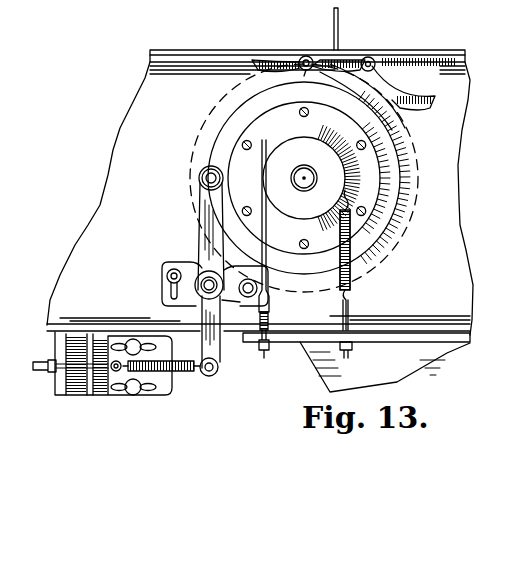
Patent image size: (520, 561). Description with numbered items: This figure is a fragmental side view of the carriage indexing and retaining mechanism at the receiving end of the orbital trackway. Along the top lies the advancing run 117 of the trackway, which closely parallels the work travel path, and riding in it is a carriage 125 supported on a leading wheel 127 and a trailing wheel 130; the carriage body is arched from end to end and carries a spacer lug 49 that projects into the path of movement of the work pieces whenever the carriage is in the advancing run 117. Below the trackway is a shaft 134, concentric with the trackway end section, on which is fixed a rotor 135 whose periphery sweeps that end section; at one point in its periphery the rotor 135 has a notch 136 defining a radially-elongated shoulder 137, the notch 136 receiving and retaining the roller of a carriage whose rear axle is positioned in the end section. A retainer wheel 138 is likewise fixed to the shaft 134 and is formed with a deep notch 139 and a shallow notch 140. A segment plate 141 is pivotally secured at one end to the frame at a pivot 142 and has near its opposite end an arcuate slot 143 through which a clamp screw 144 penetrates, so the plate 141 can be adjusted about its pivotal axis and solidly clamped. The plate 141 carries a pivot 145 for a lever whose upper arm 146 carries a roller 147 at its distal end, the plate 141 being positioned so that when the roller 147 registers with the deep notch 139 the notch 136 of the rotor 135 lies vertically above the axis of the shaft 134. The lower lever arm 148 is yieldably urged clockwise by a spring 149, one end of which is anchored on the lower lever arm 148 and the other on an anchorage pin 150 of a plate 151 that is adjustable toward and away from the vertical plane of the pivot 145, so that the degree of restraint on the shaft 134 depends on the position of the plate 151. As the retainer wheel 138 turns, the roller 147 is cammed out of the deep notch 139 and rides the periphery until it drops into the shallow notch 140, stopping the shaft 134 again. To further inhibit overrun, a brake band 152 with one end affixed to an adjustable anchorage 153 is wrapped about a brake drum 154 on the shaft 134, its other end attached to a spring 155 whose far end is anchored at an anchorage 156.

The spacer lug 49 is at (338, 18).
The advancing run 117 is at (420, 58).
The carriage 125 is at (345, 62).
The leading wheel 127 is at (372, 58).
The trailing wheel 130 is at (310, 57).
The shaft 134 is at (310, 178).
The rotor 135 is at (420, 168).
The notch 136 is at (312, 68).
The shoulder 137 is at (300, 58).
The retainer wheel 138 is at (398, 126).
The deep notch 139 is at (206, 170).
The shallow notch 140 is at (247, 278).
The segment plate 141 is at (170, 262).
The pivot 142 is at (250, 294).
The arcuate slot 143 is at (170, 297).
The clamp screw 144 is at (167, 276).
The pivot 145 is at (206, 272).
The upper arm 146 is at (201, 208).
The roller 147 is at (199, 176).
The lower lever arm 148 is at (215, 360).
The spring 149 is at (185, 372).
The anchorage pin 150 is at (114, 372).
The plate 151 is at (165, 390).
The brake band 152 is at (266, 230).
The adjustable anchorage 153 is at (270, 314).
The brake drum 154 is at (328, 143).
The spring 155 is at (350, 288).
The anchorage 156 is at (349, 352).